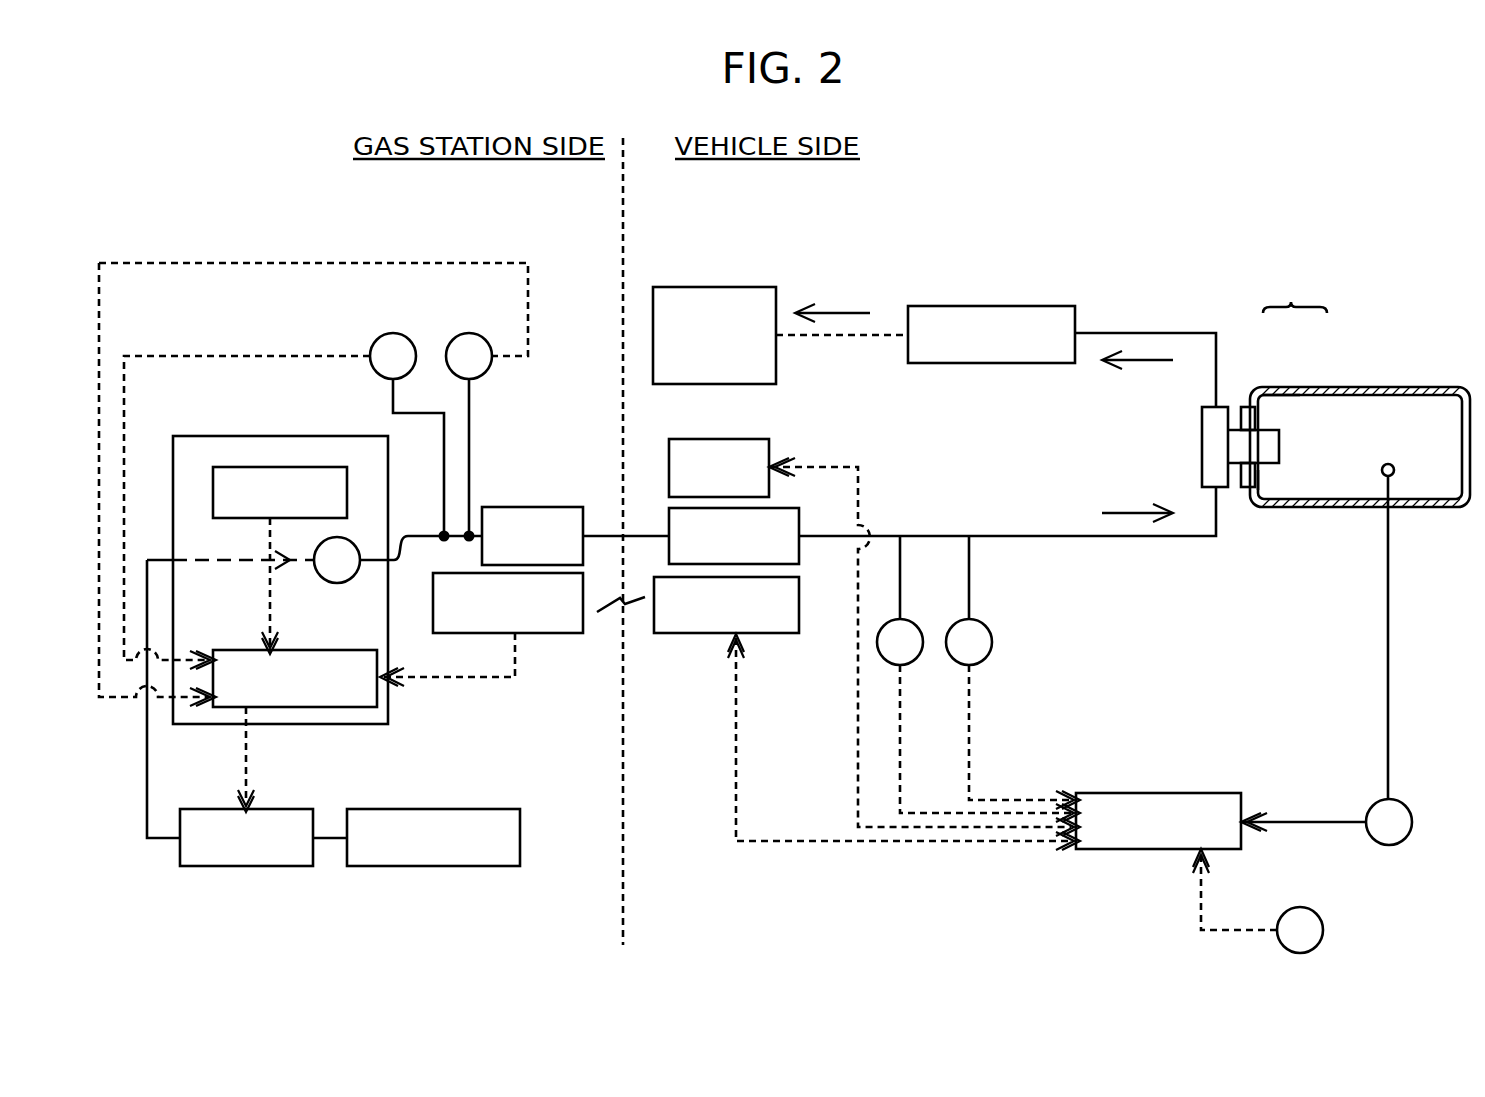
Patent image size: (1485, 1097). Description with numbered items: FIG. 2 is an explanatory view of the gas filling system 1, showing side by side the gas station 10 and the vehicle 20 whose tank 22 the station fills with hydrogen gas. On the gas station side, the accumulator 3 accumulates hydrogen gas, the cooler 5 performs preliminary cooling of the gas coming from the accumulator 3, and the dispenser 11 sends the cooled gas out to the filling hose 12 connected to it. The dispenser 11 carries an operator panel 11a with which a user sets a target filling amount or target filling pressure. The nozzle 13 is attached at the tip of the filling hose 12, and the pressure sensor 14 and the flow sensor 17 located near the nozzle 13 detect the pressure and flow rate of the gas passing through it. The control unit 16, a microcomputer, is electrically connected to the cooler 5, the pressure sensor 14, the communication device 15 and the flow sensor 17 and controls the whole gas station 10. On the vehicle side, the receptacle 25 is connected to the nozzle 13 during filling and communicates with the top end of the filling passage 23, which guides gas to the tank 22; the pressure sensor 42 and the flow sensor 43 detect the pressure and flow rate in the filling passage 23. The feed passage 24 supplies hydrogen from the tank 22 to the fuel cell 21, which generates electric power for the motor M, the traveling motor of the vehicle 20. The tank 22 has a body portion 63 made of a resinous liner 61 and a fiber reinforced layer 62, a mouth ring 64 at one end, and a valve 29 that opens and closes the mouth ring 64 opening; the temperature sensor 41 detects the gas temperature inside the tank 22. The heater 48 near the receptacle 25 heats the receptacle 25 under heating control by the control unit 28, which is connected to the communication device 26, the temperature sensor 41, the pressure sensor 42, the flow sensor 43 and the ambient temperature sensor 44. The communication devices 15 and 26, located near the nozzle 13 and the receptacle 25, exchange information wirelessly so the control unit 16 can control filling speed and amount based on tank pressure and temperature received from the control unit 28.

The gas filling system 1 is at (1348, 216).
The accumulator 3 is at (437, 808).
The cooler 5 is at (272, 808).
The gas station 10 is at (336, 252).
The dispenser 11 is at (250, 435).
The operator panel 11a is at (285, 466).
The filling hose 12 is at (410, 531).
The nozzle 13 is at (540, 506).
The pressure sensor 14 is at (478, 335).
The communication device 15 is at (556, 636).
The control unit 16 is at (340, 649).
The flow sensor 17 is at (402, 335).
The vehicle 20 is at (1099, 266).
The fuel cell 21 is at (1040, 305).
The tank 22 is at (1395, 386).
The filling passage 23 is at (1098, 540).
The feed passage 24 is at (1152, 332).
The receptacle 25 is at (802, 518).
The communication device 26 is at (803, 583).
The control unit 28 is at (1220, 792).
The valve 29 is at (1202, 447).
The temperature sensor 41 is at (1405, 803).
The pressure sensor 42 is at (912, 622).
The flow sensor 43 is at (981, 622).
The ambient temperature sensor 44 is at (1318, 912).
The heater 48 is at (760, 438).
The liner 61 is at (1302, 400).
The reinforced layer 62 is at (1275, 385).
The body portion 63 is at (1295, 293).
The mouth ring 64 is at (1262, 500).
The motor M is at (737, 286).